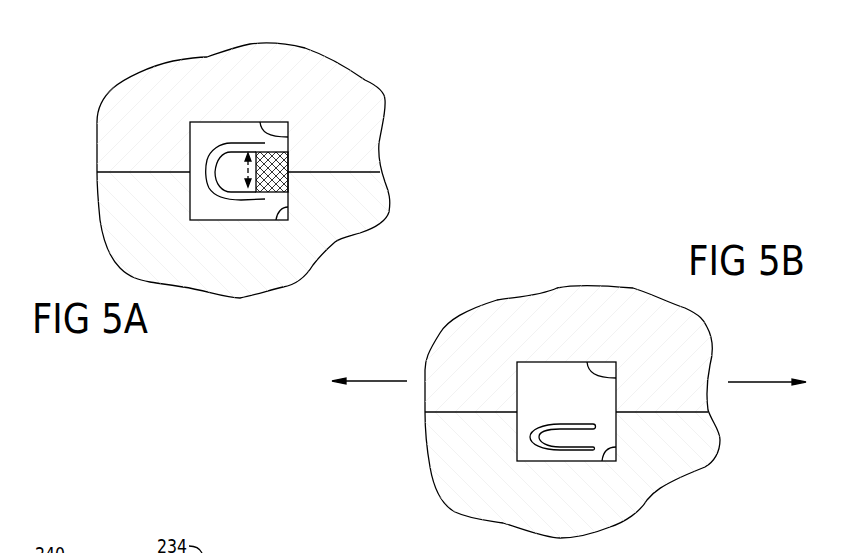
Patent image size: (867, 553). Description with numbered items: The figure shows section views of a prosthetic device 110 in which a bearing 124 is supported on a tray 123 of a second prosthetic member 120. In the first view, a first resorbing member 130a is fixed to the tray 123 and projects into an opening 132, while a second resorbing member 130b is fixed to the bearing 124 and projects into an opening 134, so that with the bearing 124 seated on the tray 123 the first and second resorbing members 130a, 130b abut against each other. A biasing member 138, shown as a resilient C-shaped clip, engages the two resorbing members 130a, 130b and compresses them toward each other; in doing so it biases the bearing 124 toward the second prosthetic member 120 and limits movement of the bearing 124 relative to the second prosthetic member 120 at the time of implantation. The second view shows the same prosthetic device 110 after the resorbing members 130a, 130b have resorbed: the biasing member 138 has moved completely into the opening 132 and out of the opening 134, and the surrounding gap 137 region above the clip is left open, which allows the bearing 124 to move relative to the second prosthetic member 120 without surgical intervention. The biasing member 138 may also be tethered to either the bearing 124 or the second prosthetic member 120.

In FIG. 5A, the prosthetic device 110 is at (87, 79).
In FIG. 5B, the prosthetic device 110 is at (418, 321).
In FIG. 5A, the second prosthetic member 120 is at (168, 250).
In FIG. 5B, the second prosthetic member 120 is at (497, 492).
In FIG. 5A, the tray 123 is at (133, 250).
In FIG. 5B, the tray 123 is at (460, 492).
In FIG. 5A, the bearing 124 is at (185, 68).
In FIG. 5B, the bearing 124 is at (515, 310).
In FIG. 5A, the first resorbing member 130a is at (288, 182).
In FIG. 5A, the second resorbing member 130b is at (288, 162).
In FIG. 5A, the opening 132 is at (288, 206).
In FIG. 5B, the opening 132 is at (616, 447).
In FIG. 5A, the opening 134 is at (288, 137).
In FIG. 5B, the opening 134 is at (616, 378).
In FIG. 5A, the gap 137 is at (237, 120).
In FIG. 5A, the biasing member 138 is at (209, 181).
In FIG. 5B, the biasing member 138 is at (535, 437).